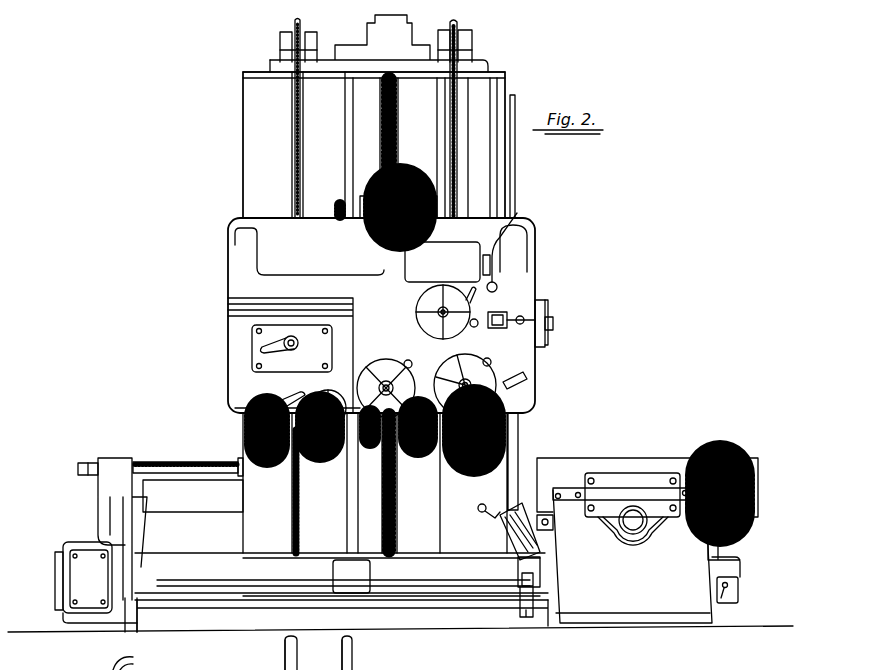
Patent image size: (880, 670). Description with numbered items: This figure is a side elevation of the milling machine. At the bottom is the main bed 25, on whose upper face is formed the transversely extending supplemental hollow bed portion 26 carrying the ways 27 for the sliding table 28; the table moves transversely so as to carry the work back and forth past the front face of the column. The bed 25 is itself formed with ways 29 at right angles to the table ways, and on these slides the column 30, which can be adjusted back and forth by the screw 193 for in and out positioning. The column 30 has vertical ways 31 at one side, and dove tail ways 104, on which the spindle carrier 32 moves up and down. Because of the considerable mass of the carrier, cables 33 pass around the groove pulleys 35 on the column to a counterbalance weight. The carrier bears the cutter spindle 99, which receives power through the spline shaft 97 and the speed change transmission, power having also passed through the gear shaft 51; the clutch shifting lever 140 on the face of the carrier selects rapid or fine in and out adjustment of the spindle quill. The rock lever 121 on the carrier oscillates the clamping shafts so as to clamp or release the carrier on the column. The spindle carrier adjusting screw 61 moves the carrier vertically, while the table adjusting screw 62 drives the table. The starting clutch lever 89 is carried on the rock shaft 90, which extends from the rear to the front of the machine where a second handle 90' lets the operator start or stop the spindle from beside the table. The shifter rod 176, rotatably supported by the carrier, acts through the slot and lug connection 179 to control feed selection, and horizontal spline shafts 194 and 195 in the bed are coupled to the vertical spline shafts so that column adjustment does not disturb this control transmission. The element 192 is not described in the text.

The main bed 25 is at (180, 532).
The supplemental hollow bed portion 26 is at (680, 548).
The ways 27 is at (568, 490).
The sliding table 28 is at (660, 467).
The ways 29 is at (160, 483).
The column 30 is at (328, 188).
The vertical ways 31 is at (250, 152).
The spindle carrier 32 is at (247, 292).
The cables 33 is at (296, 40).
The groove pulleys 35 is at (294, 42).
The gear shaft 51 is at (192, 582).
The spindle carrier adjusting screw 61 is at (396, 127).
The table adjusting screw 62 is at (630, 527).
The starting clutch lever 89 is at (113, 493).
The rock shaft 90 is at (391, 624).
The second handle 90' is at (515, 582).
The spline shaft 97 is at (345, 112).
The spindle 99 is at (570, 293).
The dove tail ways 104 is at (243, 108).
The rock lever 121 is at (517, 213).
The clutch shifting lever 140 is at (557, 333).
The shifter rod 176 is at (95, 663).
The slot and lug connection 179 is at (133, 653).
The leg 192 is at (400, 664).
The screw 193 is at (182, 462).
The spline shaft 194 is at (327, 655).
The spline shaft 195 is at (267, 655).